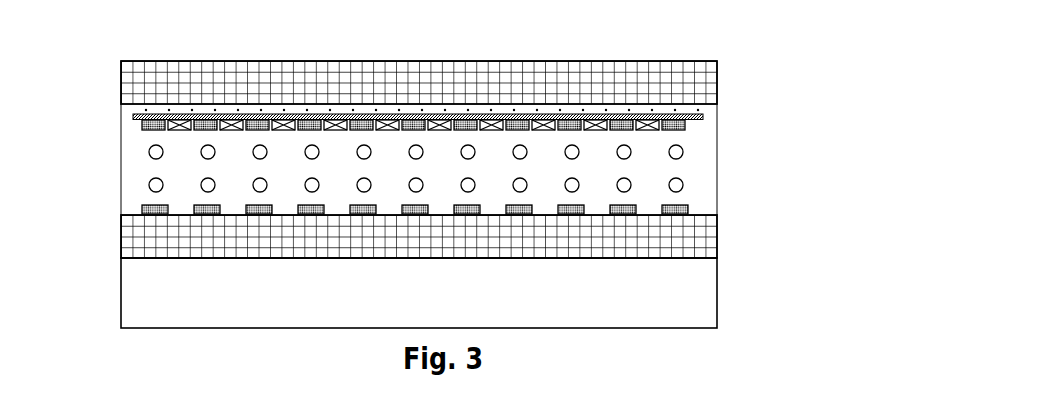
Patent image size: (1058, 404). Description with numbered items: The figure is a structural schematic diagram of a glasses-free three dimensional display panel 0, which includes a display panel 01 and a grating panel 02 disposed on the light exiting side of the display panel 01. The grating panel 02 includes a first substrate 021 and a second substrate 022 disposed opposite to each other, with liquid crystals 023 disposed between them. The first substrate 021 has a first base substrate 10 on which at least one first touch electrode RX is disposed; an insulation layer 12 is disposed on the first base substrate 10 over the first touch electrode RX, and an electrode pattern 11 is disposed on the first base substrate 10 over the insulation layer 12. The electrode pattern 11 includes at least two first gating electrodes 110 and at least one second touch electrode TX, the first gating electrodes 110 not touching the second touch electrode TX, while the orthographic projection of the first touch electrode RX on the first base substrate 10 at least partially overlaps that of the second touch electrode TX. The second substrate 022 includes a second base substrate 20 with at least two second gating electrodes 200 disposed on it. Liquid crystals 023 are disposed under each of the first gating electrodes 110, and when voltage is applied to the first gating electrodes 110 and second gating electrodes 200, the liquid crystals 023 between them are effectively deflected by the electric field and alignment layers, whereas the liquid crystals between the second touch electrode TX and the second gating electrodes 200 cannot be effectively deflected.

The glasses-free three dimensional display panel 0 is at (447, 45).
The display panel 01 is at (731, 280).
The grating panel 02 is at (886, 222).
The first substrate 021 is at (823, 84).
The second substrate 022 is at (830, 208).
The liquid crystals 023 is at (702, 185).
The first base substrate 10 is at (730, 83).
The electrode pattern 11 is at (448, 160).
The first gating electrode 110 is at (132, 137).
The insulation layer 12 is at (714, 118).
The second base substrate 20 is at (730, 232).
The second gating electrode 200 is at (702, 209).
The first touch electrode RX is at (716, 109).
The second touch electrode TX is at (173, 137).